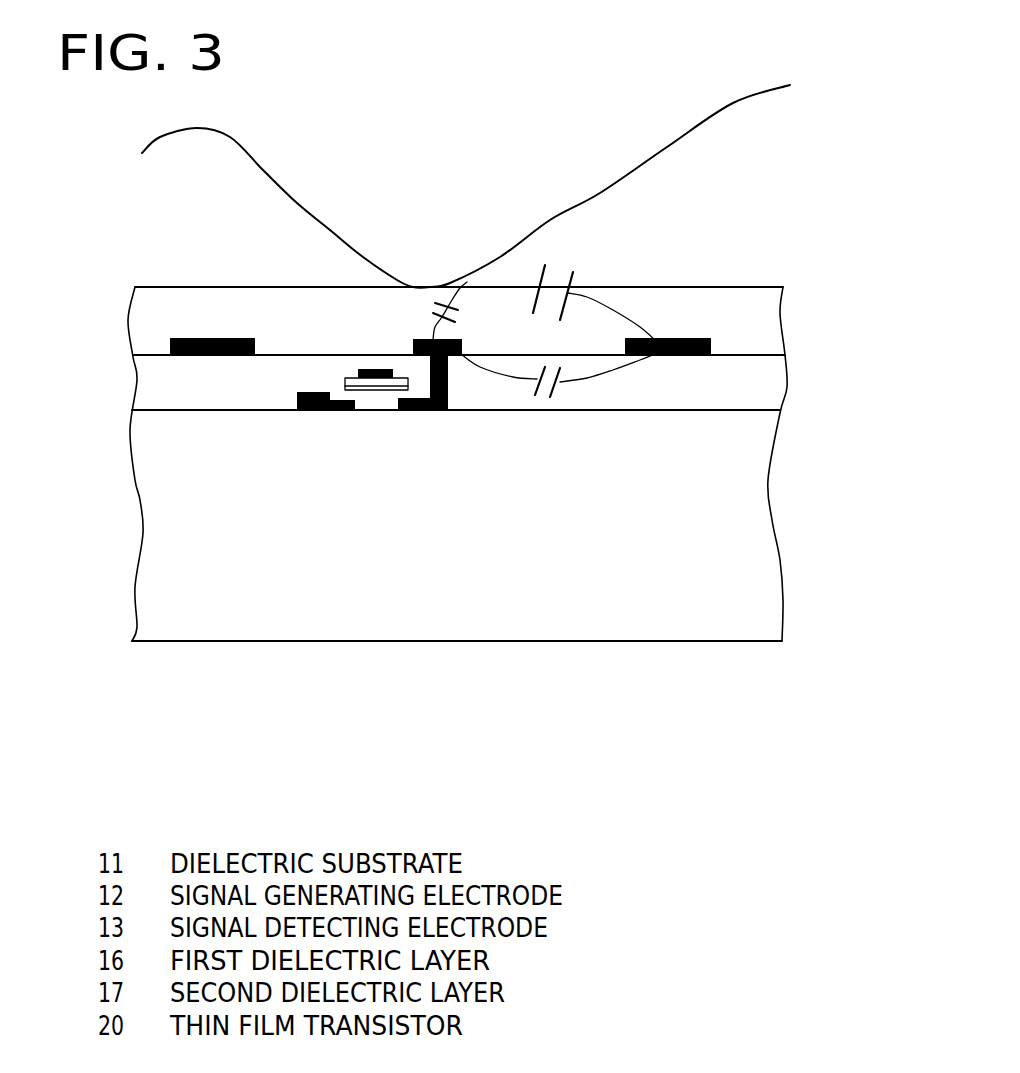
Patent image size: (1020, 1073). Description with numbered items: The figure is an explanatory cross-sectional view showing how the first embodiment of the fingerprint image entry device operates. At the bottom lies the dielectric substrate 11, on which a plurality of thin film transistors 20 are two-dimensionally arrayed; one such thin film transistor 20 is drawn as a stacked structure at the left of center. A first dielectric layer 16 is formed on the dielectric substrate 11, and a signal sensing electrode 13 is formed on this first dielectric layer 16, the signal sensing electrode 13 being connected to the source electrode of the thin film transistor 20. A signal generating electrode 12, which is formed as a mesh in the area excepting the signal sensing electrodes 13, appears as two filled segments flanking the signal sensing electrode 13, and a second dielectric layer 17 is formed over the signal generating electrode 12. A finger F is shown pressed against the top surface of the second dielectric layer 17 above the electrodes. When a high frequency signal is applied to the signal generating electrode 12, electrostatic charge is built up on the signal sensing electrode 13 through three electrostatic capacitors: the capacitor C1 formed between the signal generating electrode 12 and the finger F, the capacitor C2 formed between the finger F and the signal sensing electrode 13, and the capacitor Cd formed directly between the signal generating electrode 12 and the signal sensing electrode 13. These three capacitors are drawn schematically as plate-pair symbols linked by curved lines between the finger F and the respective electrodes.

The dielectric substrate 11 is at (750, 548).
The signal generating electrode 12 is at (208, 356).
The signal sensing electrode 13 is at (460, 357).
The first dielectric layer 16 is at (762, 372).
The second dielectric layer 17 is at (762, 313).
The thin film transistor 20 is at (382, 427).
The finger F is at (587, 192).
The electrostatic capacitor C1 is at (580, 303).
The electrostatic capacitor C2 is at (435, 311).
The electrostatic capacitor Cd is at (557, 382).